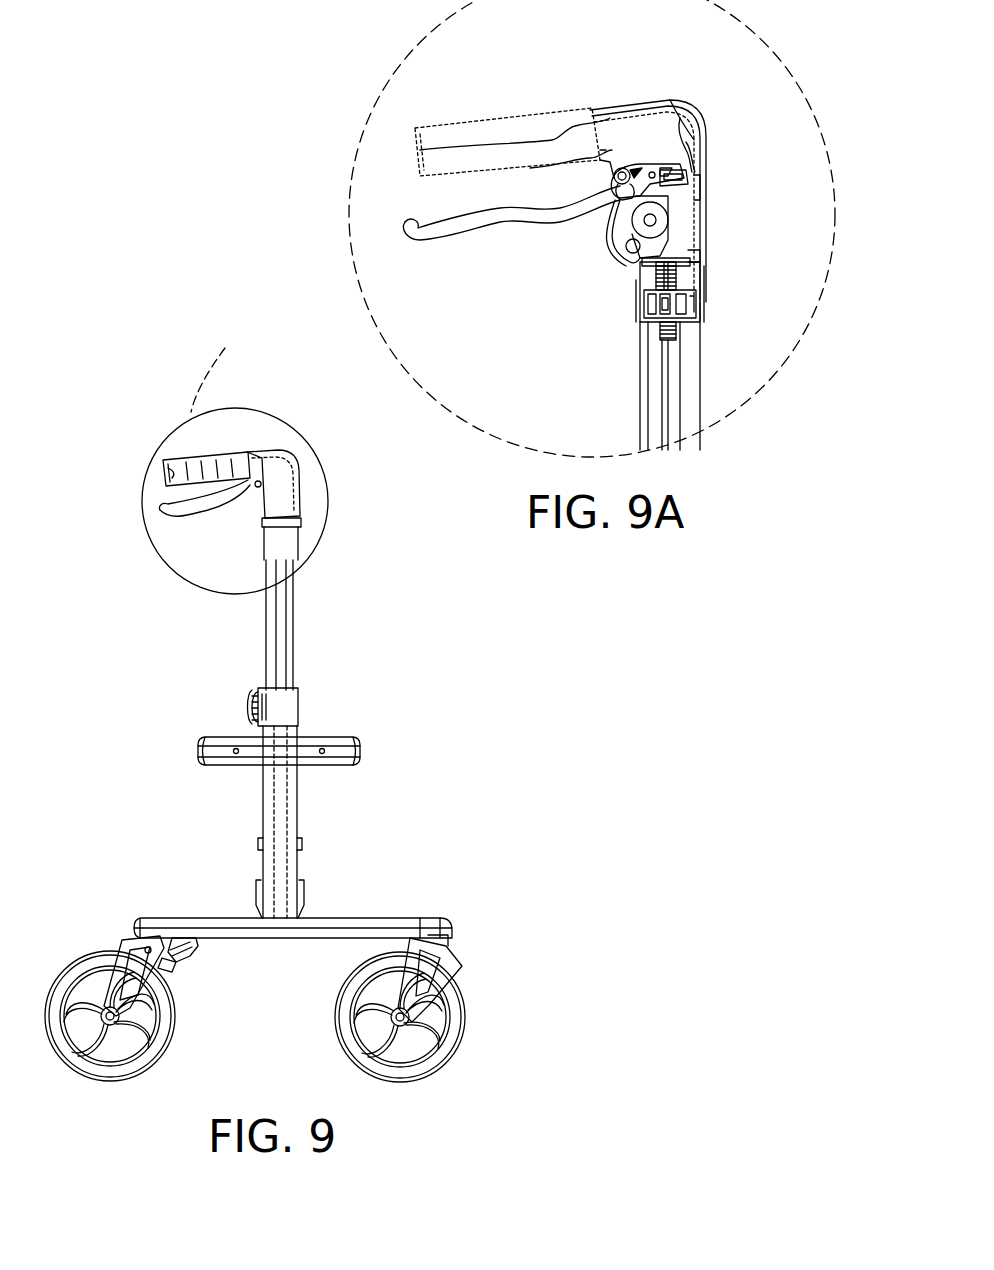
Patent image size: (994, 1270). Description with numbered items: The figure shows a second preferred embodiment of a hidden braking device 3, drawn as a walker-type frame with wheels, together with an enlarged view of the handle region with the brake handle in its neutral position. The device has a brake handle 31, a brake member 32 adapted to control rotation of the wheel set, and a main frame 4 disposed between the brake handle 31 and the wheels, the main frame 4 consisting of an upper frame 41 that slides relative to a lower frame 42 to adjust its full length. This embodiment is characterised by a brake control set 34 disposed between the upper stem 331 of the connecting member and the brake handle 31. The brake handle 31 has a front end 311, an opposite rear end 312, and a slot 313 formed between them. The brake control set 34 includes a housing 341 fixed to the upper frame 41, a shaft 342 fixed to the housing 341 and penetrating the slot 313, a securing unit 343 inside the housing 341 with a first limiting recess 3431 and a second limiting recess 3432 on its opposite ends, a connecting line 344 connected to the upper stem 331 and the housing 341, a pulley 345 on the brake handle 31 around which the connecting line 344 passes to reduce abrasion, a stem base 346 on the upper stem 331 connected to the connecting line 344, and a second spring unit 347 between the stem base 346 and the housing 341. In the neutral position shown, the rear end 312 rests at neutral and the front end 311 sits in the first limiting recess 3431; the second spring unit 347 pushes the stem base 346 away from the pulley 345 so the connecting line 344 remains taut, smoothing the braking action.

In FIG. 9, the hidden braking device 3 is at (123, 348).
In FIG. 9, the main frame 4 is at (264, 618).
In FIG. 9, the brake handle 31 is at (155, 511).
In FIG. 9, the brake member 32 is at (182, 942).
In FIG. 9, the brake control set 34 is at (300, 510).
In FIG. 9, the upper frame 41 is at (270, 643).
In FIG. 9, the lower frame 42 is at (265, 862).
In FIG. 9A, the front end 311 is at (700, 172).
In FIG. 9A, the rear end 312 is at (404, 232).
In FIG. 9A, the slot 313 is at (628, 190).
In FIG. 9A, the upper stem 331 is at (666, 380).
In FIG. 9, the housing 341 is at (282, 493).
In FIG. 9A, the housing 341 is at (696, 185).
In FIG. 9A, the shaft 342 is at (614, 178).
In FIG. 9A, the securing unit 343 is at (706, 185).
In FIG. 9A, the connecting line 344 is at (664, 242).
In FIG. 9A, the pulley 345 is at (650, 222).
In FIG. 9A, the stem base 346 is at (690, 320).
In FIG. 9A, the second spring unit 347 is at (655, 274).
In FIG. 9A, the first limiting recess 3431 is at (680, 182).
In FIG. 9A, the second limiting recess 3432 is at (702, 148).